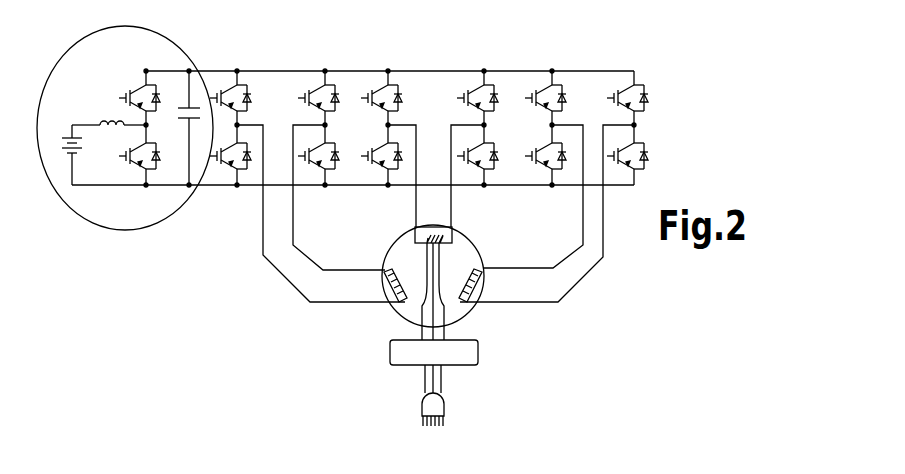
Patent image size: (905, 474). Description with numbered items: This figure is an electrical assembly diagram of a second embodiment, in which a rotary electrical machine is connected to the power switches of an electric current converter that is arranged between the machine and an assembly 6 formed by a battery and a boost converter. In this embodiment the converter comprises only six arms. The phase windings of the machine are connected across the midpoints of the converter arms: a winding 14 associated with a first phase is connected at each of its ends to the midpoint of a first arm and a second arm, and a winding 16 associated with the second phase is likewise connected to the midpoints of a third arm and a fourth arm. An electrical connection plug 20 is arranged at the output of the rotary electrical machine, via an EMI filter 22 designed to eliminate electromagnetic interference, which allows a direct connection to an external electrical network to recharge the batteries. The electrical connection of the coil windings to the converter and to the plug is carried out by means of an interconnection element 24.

The assembly formed by a battery and a boost converter 6 is at (66, 214).
The winding 14 is at (378, 282).
The winding 16 is at (427, 240).
The electrical connection plug 20 is at (446, 402).
The EMI filter 22 is at (390, 352).
The interconnection element 24 is at (479, 254).